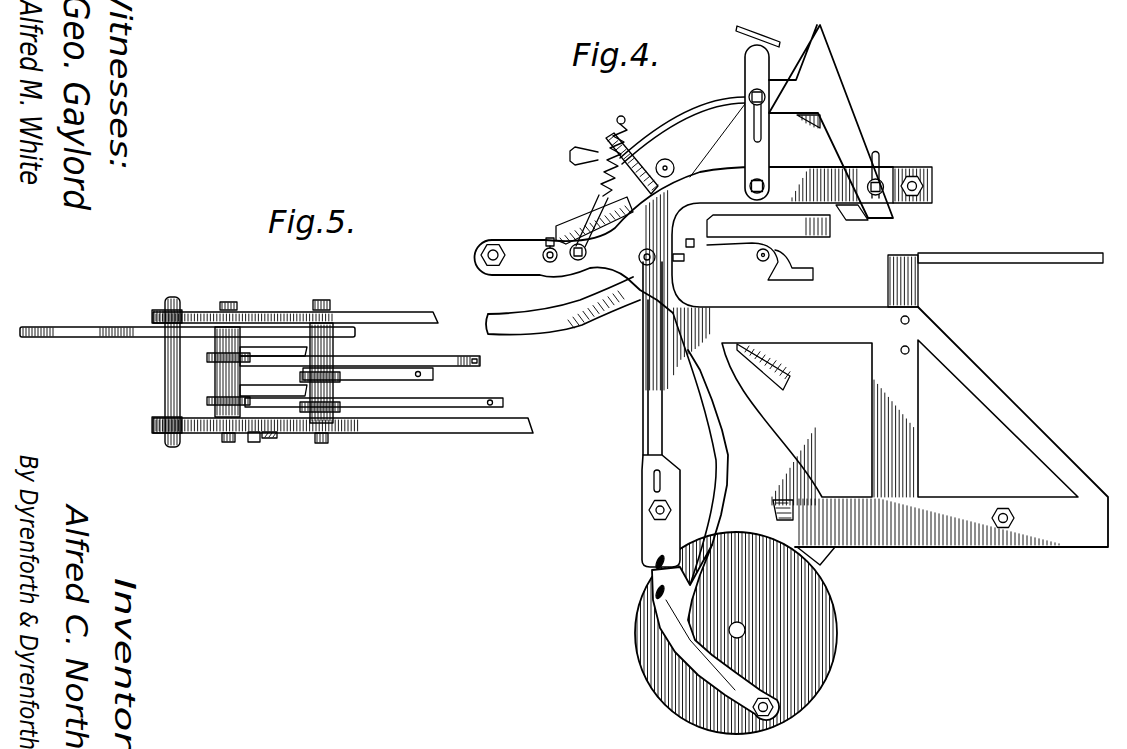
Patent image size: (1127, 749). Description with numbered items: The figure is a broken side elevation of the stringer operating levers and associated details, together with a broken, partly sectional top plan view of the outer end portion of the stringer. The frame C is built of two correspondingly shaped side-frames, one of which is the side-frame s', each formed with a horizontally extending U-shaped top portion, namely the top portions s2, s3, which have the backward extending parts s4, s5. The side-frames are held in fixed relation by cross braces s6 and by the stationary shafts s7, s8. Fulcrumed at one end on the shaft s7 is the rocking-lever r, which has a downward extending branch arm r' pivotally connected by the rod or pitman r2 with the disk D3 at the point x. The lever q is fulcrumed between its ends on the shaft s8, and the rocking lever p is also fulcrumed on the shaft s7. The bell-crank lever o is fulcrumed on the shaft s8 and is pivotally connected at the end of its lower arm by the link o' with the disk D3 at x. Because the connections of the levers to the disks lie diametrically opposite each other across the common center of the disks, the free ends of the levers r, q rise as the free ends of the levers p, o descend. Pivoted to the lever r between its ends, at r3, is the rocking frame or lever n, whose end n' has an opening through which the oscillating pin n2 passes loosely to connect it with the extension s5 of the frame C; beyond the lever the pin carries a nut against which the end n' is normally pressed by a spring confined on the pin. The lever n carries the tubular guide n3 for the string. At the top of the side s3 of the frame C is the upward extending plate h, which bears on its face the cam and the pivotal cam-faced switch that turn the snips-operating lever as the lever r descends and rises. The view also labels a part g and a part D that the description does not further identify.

In FIG. 4, the tubular guide n3 is at (703, 104).
In FIG. 4, the end of lever n n' is at (598, 156).
In FIG. 4, the rocking frame or lever n is at (765, 173).
In FIG. 4, the rocking-lever r is at (693, 188).
In FIG. 5, the rocking-lever r is at (374, 430).
In FIG. 4, the oscillating pin n2 is at (580, 228).
In FIG. 5, the oscillating pin n2 is at (266, 442).
In FIG. 4, the stationary shaft s7 is at (546, 249).
In FIG. 5, the stationary shaft s7 is at (230, 443).
In FIG. 4, the cross braces s6 is at (490, 255).
In FIG. 5, the cross braces s6 is at (166, 381).
In FIG. 4, the stationary shaft s8 is at (640, 257).
In FIG. 5, the stationary shaft s8 is at (323, 443).
In FIG. 4, the backward extending part s5 is at (536, 264).
In FIG. 5, the backward extending part s5 is at (201, 421).
In FIG. 4, the rod g is at (546, 326).
In FIG. 5, the rod g is at (85, 336).
In FIG. 4, the rocking lever p is at (618, 290).
In FIG. 5, the rocking lever p is at (212, 357).
In FIG. 4, the bell-crank lever o is at (642, 431).
In FIG. 5, the bell-crank lever o is at (344, 382).
In FIG. 4, the rod or pitman r2 is at (724, 472).
In FIG. 4, the link o' is at (666, 645).
In FIG. 4, the shaft D is at (746, 628).
In FIG. 4, the disk D3 is at (836, 640).
In FIG. 4, the pivot point x is at (792, 710).
In FIG. 4, the lever q is at (770, 366).
In FIG. 4, the side-frame s' is at (870, 430).
In FIG. 4, the frame C is at (980, 545).
In FIG. 4, the upward extending plate h is at (848, 90).
In FIG. 4, the U-shaped top portion s3 is at (822, 313).
In FIG. 5, the U-shaped top portion s3 is at (413, 416).
In FIG. 4, the pivot r3 is at (712, 247).
In FIG. 4, the branch arm r' is at (706, 278).
In FIG. 5, the backward extending part s4 is at (215, 312).
In FIG. 5, the U-shaped top portion s2 is at (397, 317).